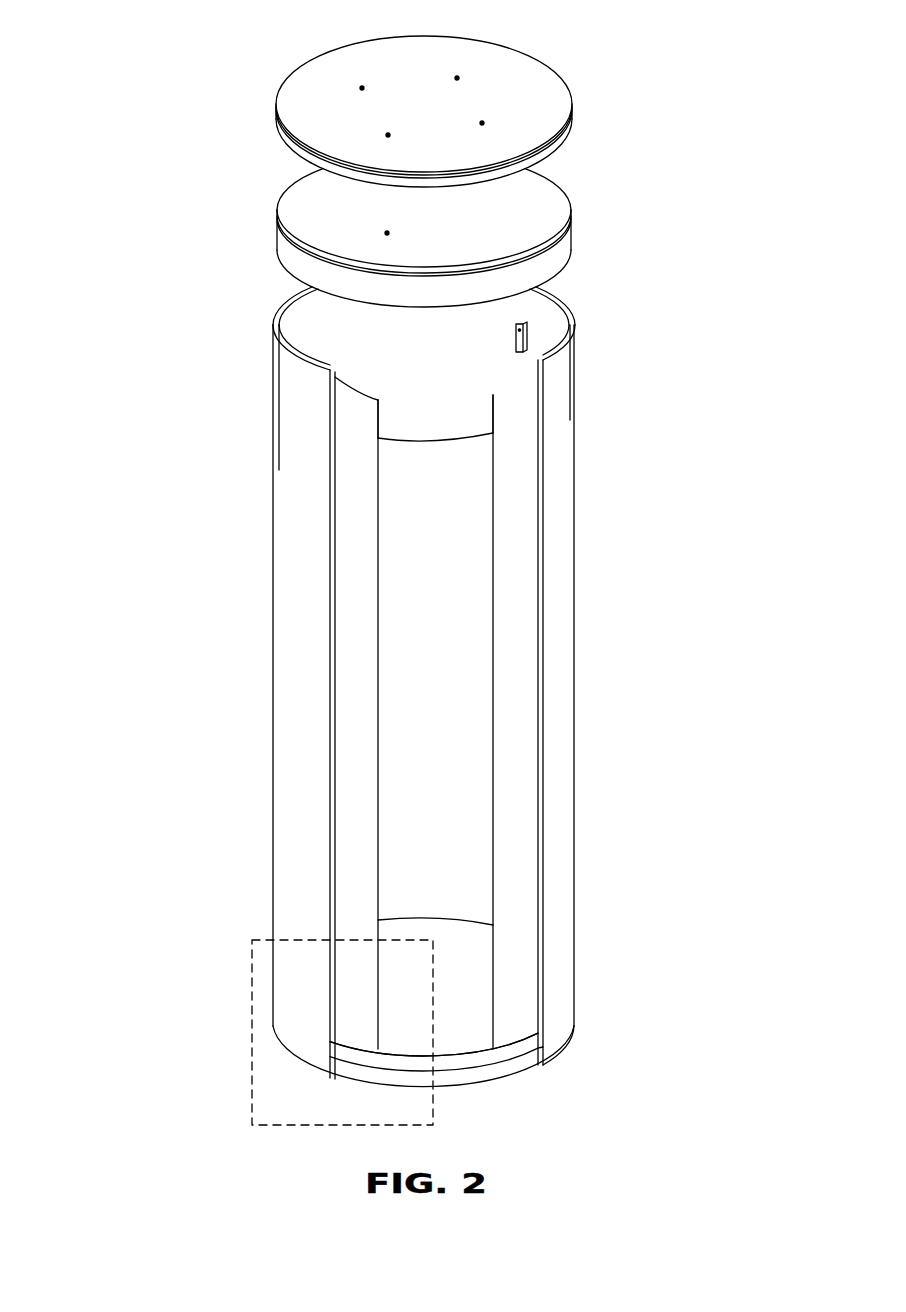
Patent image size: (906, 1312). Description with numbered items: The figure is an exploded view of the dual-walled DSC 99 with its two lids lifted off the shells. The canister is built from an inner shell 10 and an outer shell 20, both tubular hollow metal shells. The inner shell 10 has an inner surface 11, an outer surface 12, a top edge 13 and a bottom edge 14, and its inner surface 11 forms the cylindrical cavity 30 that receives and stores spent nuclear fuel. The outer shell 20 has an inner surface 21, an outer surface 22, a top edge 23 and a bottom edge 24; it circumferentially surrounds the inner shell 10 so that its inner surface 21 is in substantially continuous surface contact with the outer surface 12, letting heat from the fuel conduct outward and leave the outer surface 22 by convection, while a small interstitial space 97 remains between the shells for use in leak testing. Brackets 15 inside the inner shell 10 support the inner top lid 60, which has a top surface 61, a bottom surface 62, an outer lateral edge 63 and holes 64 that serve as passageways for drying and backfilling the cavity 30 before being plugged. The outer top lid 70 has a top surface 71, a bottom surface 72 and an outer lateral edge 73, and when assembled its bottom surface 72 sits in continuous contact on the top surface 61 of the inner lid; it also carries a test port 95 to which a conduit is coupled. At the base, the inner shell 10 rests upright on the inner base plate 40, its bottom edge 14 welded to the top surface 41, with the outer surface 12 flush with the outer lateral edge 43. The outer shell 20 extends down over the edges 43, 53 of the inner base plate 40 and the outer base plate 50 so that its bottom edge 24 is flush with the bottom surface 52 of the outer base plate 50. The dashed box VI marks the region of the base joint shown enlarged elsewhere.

The dual-walled DSC 99 is at (700, 113).
The outer top lid 70 is at (513, 80).
The top surface 71 is at (333, 75).
The bottom surface 72 is at (305, 147).
The outer lateral surface/edge 73 is at (570, 135).
The test port 95 is at (327, 100).
The inner top lid 60 is at (491, 227).
The top surface 61 is at (360, 183).
The bottom surface 62 is at (572, 250).
The outer lateral surface/edge 63 is at (296, 244).
The holes 64 is at (443, 253).
The top edge 23 is at (280, 316).
The top edge 13 is at (505, 392).
The brackets 15 is at (528, 340).
The outer shell 20 is at (292, 710).
The inner surface 21 is at (538, 752).
The outer surface 22 is at (555, 882).
The inner shell 10 is at (355, 591).
The inner surface 11 is at (468, 588).
The outer surface 12 is at (513, 552).
The cavity/space 30 is at (462, 673).
The interstitial space 97 is at (533, 636).
The top surface 41 is at (417, 930).
The inner base plate 40 is at (461, 1068).
The outer lateral surface/edge 43 is at (387, 1065).
The outer base plate 50 is at (520, 1067).
The bottom surface 52 is at (508, 1082).
The outer lateral surface/edge 53 is at (410, 1083).
The bottom edge 14 is at (513, 1043).
The bottom edge 24 is at (565, 1055).
The detail view VI is at (252, 962).